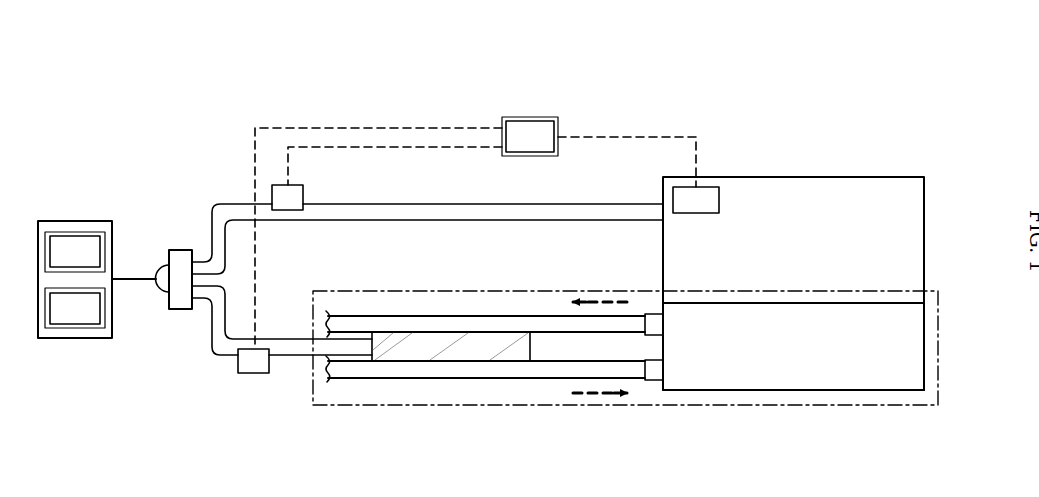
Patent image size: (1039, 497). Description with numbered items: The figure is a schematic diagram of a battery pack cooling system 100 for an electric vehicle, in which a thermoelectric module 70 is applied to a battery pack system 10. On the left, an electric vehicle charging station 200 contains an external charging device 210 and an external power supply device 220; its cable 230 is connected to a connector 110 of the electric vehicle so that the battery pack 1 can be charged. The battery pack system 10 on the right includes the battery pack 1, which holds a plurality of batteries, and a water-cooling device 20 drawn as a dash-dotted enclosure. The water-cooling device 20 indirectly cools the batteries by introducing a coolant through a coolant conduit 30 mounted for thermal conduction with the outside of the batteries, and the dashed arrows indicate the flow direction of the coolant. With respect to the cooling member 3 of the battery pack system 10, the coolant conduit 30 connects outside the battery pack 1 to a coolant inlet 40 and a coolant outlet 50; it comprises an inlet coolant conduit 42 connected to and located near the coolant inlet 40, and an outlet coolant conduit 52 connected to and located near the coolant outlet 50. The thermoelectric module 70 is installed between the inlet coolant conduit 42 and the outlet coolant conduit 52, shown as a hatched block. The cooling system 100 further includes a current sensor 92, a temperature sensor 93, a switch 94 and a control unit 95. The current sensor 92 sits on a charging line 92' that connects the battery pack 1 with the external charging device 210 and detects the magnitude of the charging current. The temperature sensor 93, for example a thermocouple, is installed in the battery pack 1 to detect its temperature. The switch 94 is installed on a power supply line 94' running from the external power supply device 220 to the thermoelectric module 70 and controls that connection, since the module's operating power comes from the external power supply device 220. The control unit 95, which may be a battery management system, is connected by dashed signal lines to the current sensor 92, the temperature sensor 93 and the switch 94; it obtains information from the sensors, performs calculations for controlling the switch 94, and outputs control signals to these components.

The battery pack cooling system 100 is at (331, 74).
The battery pack system 10 is at (843, 136).
The battery pack 1 is at (918, 236).
The cooling member 3 is at (918, 338).
The water-cooling device 20 is at (812, 407).
The coolant conduit 30 is at (513, 304).
The inlet coolant conduit 42 is at (467, 378).
The coolant inlet 40 is at (652, 380).
The coolant outlet 50 is at (652, 314).
The outlet coolant conduit 52 is at (467, 322).
The thermoelectric module 70 is at (423, 338).
The current sensor 92 is at (427, 211).
The charging line 92' is at (427, 220).
The temperature sensor 93 is at (719, 204).
The switch 94 is at (282, 355).
The power supply line 94' is at (282, 320).
The control unit 95 is at (475, 233).
The connector 110 is at (185, 250).
The electric vehicle charging station 200 is at (62, 220).
The external charging device 210 is at (75, 252).
The external power supply device 220 is at (75, 308).
The cable 230 is at (128, 279).